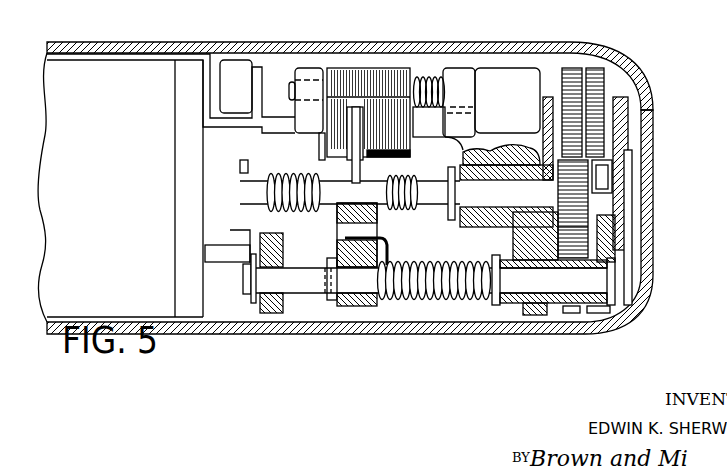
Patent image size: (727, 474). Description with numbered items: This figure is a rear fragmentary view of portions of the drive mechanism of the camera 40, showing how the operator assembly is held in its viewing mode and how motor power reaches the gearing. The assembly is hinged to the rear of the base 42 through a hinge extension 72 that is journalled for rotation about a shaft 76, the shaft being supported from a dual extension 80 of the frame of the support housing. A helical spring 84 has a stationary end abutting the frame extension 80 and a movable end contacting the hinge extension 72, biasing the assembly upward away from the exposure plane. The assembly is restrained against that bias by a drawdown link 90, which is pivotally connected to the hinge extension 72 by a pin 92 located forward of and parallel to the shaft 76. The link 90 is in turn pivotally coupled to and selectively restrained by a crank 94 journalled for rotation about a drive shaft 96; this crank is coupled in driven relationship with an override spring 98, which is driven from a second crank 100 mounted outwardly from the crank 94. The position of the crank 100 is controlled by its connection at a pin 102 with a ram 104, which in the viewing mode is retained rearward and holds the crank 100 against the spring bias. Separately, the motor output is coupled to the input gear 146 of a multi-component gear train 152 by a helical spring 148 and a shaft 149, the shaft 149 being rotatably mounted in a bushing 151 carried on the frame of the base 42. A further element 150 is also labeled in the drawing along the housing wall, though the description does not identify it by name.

The camera 40 is at (618, 47).
The base 42 is at (655, 255).
The hinge extension 72 is at (378, 70).
The shaft 76 is at (289, 90).
The dual extension 80 is at (310, 68).
The helical spring 84 is at (428, 78).
The drawdown link 90 is at (356, 107).
The pin 92 is at (470, 115).
The crank 94 is at (366, 300).
The drive shaft 96 is at (313, 294).
The override spring 98 is at (440, 302).
The crank 100 is at (608, 252).
The pin 102 is at (612, 170).
The ram 104 is at (628, 223).
The input gear 146 is at (605, 157).
The helical spring 148 is at (313, 211).
The shaft 149 is at (433, 206).
The liner plate 150 is at (180, 58).
The bushing 151 is at (550, 230).
The gear train 152 is at (612, 85).